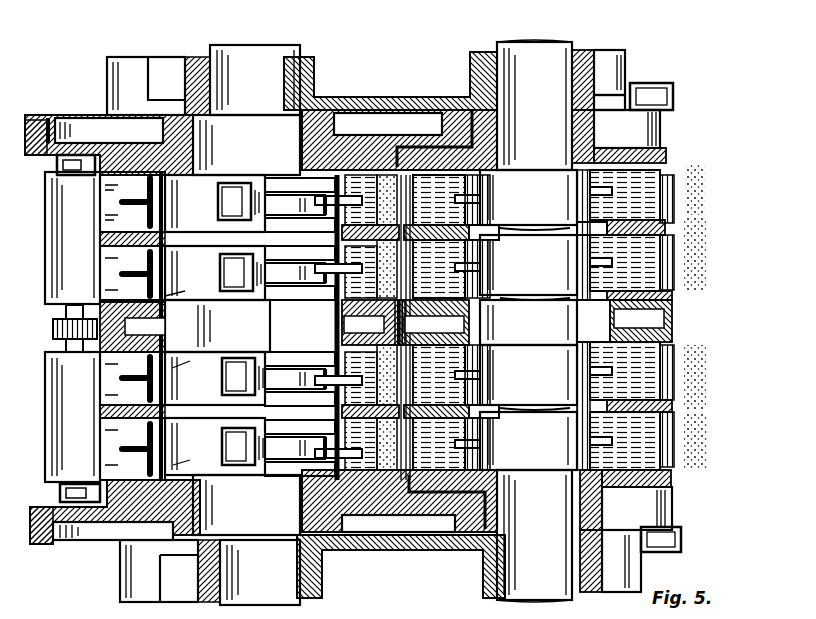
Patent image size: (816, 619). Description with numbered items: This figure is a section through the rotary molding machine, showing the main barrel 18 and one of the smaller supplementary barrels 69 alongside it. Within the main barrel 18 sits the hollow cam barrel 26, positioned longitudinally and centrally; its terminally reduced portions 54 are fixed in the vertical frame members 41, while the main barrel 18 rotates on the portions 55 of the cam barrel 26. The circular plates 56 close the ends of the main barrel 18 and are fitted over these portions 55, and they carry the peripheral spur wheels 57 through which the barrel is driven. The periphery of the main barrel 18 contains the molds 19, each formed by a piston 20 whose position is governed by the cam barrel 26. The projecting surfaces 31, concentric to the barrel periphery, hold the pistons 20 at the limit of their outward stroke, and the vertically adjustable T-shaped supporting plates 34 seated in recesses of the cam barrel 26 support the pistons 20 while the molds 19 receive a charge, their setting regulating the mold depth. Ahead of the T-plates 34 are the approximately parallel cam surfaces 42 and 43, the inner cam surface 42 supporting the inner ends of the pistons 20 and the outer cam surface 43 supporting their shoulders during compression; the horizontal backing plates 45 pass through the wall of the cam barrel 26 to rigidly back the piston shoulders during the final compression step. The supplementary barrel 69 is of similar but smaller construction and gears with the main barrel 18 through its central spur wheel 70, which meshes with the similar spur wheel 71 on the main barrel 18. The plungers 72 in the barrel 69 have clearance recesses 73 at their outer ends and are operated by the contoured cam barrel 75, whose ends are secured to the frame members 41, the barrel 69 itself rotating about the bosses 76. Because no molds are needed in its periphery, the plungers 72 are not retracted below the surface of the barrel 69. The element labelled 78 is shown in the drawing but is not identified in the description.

The main barrel 18 is at (177, 403).
The peripheral molds 19 is at (167, 257).
The pistons 20 is at (238, 326).
The cam barrel 26 is at (185, 326).
The projecting surfaces 31 is at (428, 612).
The T-shaped supporting plates 34 is at (215, 325).
The frame member 41 is at (418, 98).
The inner cam surface 42 is at (295, 326).
The outer cam surface 43 is at (301, 327).
The backing plates 45 is at (346, 325).
The terminally reduced portions 54 is at (203, 325).
The portions 55 is at (246, 325).
The circular plates 56 is at (107, 552).
The peripheral spur wheels 57 is at (33, 118).
The supplementary barrel 69 is at (624, 316).
The central spur wheel 70 is at (415, 324).
The spur wheel 71 is at (378, 322).
The plungers 72 is at (536, 320).
The clearance recesses 73 is at (530, 327).
The cam barrel 75 is at (528, 320).
The bosses 76 is at (534, 321).
The gear 78 is at (714, 456).